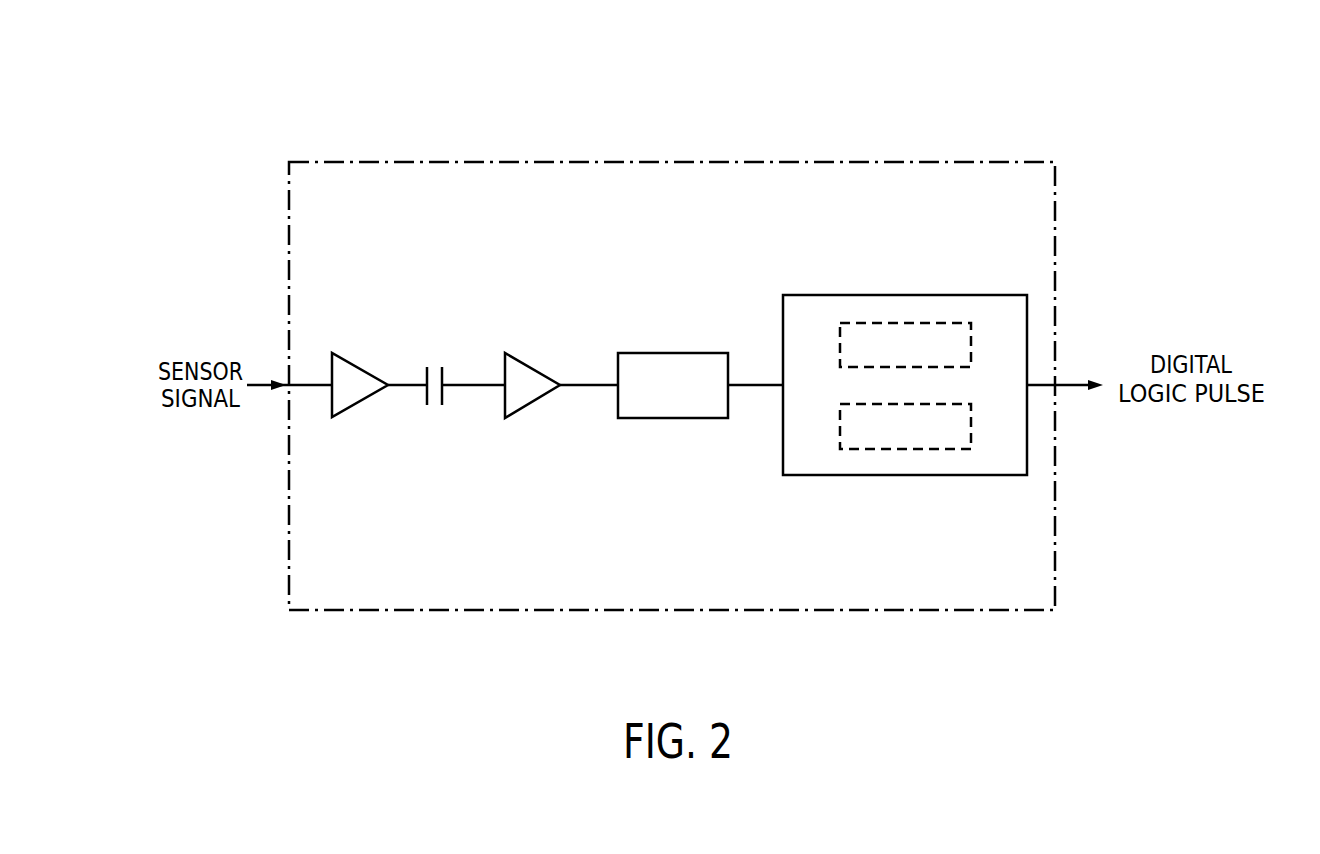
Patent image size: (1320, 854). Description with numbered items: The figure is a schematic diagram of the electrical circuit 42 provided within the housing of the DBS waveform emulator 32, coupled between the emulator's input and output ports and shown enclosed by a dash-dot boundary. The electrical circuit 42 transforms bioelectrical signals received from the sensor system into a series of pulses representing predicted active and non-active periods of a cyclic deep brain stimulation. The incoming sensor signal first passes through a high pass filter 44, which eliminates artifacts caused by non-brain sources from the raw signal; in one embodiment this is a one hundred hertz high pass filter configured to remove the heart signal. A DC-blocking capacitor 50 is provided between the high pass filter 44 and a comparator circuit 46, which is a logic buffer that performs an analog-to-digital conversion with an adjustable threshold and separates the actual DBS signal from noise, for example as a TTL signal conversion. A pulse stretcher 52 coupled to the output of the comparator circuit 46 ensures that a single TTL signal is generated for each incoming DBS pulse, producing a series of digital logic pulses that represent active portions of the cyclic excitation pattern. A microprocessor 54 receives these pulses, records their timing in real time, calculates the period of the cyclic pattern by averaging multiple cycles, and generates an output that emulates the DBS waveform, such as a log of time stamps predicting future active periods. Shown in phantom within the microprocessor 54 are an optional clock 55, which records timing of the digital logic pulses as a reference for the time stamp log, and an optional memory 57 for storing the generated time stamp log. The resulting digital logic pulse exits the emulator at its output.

The electrical circuit 42 is at (222, 101).
The DBS waveform emulator 32 is at (425, 162).
The high pass filter 44 is at (357, 365).
The DC-blocking capacitor 50 is at (443, 393).
The comparator circuit 46 is at (530, 364).
The pulse stretcher 52 is at (672, 353).
The microprocessor 54 is at (905, 295).
The clock 55 is at (892, 368).
The memory 57 is at (920, 404).